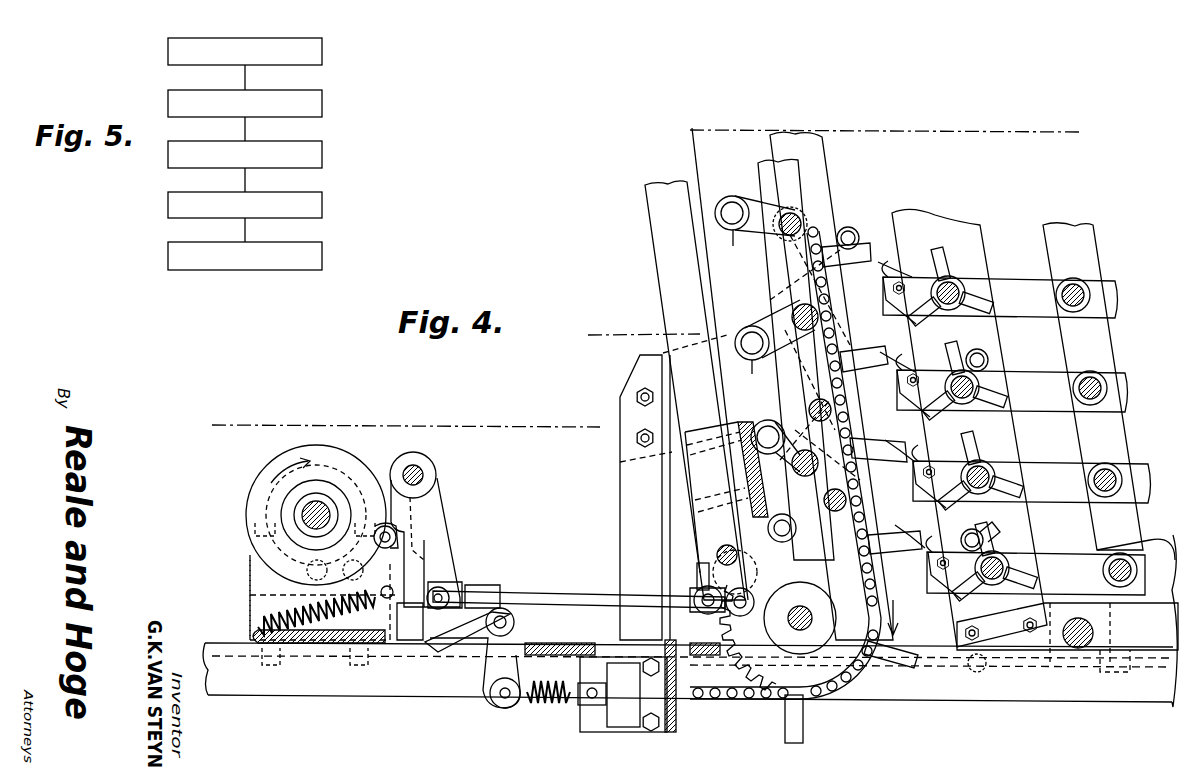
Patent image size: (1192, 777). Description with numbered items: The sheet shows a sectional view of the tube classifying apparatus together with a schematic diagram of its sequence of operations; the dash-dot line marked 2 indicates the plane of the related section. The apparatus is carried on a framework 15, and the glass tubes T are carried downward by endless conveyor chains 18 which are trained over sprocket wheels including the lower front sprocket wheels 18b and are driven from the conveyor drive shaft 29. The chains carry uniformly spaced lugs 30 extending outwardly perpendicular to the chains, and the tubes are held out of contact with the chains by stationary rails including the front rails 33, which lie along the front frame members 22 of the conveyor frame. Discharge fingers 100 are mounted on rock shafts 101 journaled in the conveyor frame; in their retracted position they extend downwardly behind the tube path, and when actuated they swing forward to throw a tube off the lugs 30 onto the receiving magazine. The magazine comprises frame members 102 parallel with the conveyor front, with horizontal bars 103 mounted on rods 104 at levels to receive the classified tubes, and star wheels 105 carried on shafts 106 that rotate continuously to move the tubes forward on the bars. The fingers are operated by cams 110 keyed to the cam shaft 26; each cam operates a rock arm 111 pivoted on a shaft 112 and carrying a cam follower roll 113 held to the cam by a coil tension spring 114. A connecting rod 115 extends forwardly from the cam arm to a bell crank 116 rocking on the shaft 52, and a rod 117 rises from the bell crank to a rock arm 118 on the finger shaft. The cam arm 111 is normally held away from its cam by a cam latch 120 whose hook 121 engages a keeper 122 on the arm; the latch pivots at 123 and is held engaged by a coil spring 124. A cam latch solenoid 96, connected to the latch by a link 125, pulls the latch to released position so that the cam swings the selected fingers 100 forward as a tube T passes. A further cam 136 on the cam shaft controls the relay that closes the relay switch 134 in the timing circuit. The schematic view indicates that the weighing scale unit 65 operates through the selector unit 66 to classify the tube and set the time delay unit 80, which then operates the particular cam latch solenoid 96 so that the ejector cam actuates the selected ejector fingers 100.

In FIG. 5, the electronic weighing scale unit 65 is at (323, 57).
In FIG. 5, the selector unit 66 is at (323, 108).
In FIG. 5, the time delay unit 80 is at (323, 156).
In FIG. 5, the cam latch solenoid 96 is at (323, 205).
In FIG. 4, the cam latch solenoid 96 is at (630, 712).
In FIG. 5, the discharge fingers 100 is at (323, 256).
In FIG. 4, the discharge fingers 100 is at (832, 263).
In FIG. 4, the section line 2- 2 is at (227, 434).
In FIG. 4, the framework 15 is at (276, 690).
In FIG. 4, the endless conveyor chains 18 is at (870, 677).
In FIG. 4, the lower front sprocket wheels 18b is at (891, 647).
In FIG. 4, the front frame members 22 is at (652, 310).
In FIG. 4, the cam shaft 26 is at (320, 508).
In FIG. 4, the conveyor drive shaft 29 is at (813, 613).
In FIG. 4, the lugs 30 is at (893, 448).
In FIG. 4, the front rails 33 is at (826, 190).
In FIG. 4, the shaft 52 is at (716, 556).
In FIG. 4, the rock shafts 101 is at (820, 398).
In FIG. 4, the magazine frame members 102 is at (946, 230).
In FIG. 4, the horizontal bars 103 is at (1040, 313).
In FIG. 4, the rods 104 is at (1095, 395).
In FIG. 4, the star wheels 105 is at (940, 257).
In FIG. 4, the shafts 106 is at (968, 293).
In FIG. 4, the cams 110 is at (248, 503).
In FIG. 4, the rock arm 111 is at (445, 553).
In FIG. 4, the shaft 112 is at (428, 472).
In FIG. 4, the cam follower roll 113 is at (389, 554).
In FIG. 4, the coil tension spring 114 is at (335, 628).
In FIG. 4, the connecting rods 115 is at (607, 594).
In FIG. 4, the bell cranks 116 is at (748, 596).
In FIG. 4, the rods 117 is at (733, 250).
In FIG. 4, the rock arms 118 is at (766, 318).
In FIG. 4, the cam latches 120 is at (473, 645).
In FIG. 4, the hook 121 is at (428, 632).
In FIG. 4, the keeper 122 is at (398, 628).
In FIG. 4, the latch pivot 123 is at (505, 612).
In FIG. 4, the coil spring 124 is at (538, 702).
In FIG. 4, the link 125 is at (577, 706).
In FIG. 4, the relay switch 134 is at (258, 602).
In FIG. 4, the cam 136 is at (262, 566).
In FIG. 4, the glass tubes T is at (850, 228).